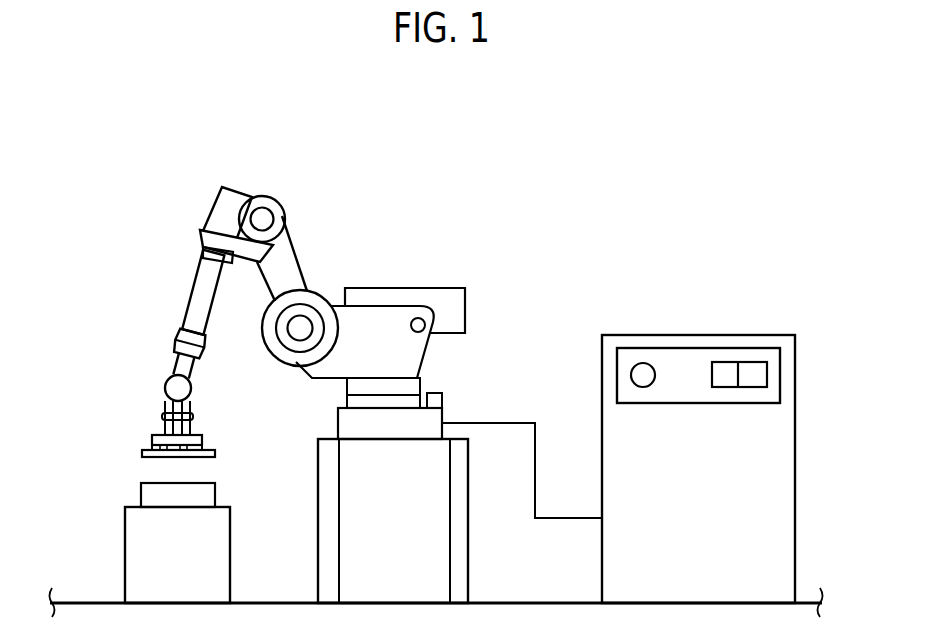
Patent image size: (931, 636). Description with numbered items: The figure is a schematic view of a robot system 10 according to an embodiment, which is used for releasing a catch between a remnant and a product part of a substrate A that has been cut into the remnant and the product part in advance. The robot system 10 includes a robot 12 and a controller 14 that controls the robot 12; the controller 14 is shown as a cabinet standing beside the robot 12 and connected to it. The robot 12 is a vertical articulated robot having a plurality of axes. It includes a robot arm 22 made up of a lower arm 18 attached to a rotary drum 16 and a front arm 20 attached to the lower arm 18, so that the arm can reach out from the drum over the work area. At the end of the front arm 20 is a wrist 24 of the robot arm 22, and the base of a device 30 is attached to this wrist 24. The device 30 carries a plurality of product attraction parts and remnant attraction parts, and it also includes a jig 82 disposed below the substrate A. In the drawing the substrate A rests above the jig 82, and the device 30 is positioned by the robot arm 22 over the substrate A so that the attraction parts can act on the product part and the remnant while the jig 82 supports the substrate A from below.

The robot system 10 is at (770, 129).
The robot 12 is at (343, 202).
The controller 14 is at (760, 335).
The rotary drum 16 is at (405, 357).
The lower arm 18 is at (282, 252).
The front arm 20 is at (207, 297).
The robot arm 22 is at (178, 180).
The wrist 24 is at (172, 390).
The device 30 is at (148, 425).
The substrate A is at (137, 455).
The jig 82 is at (140, 493).